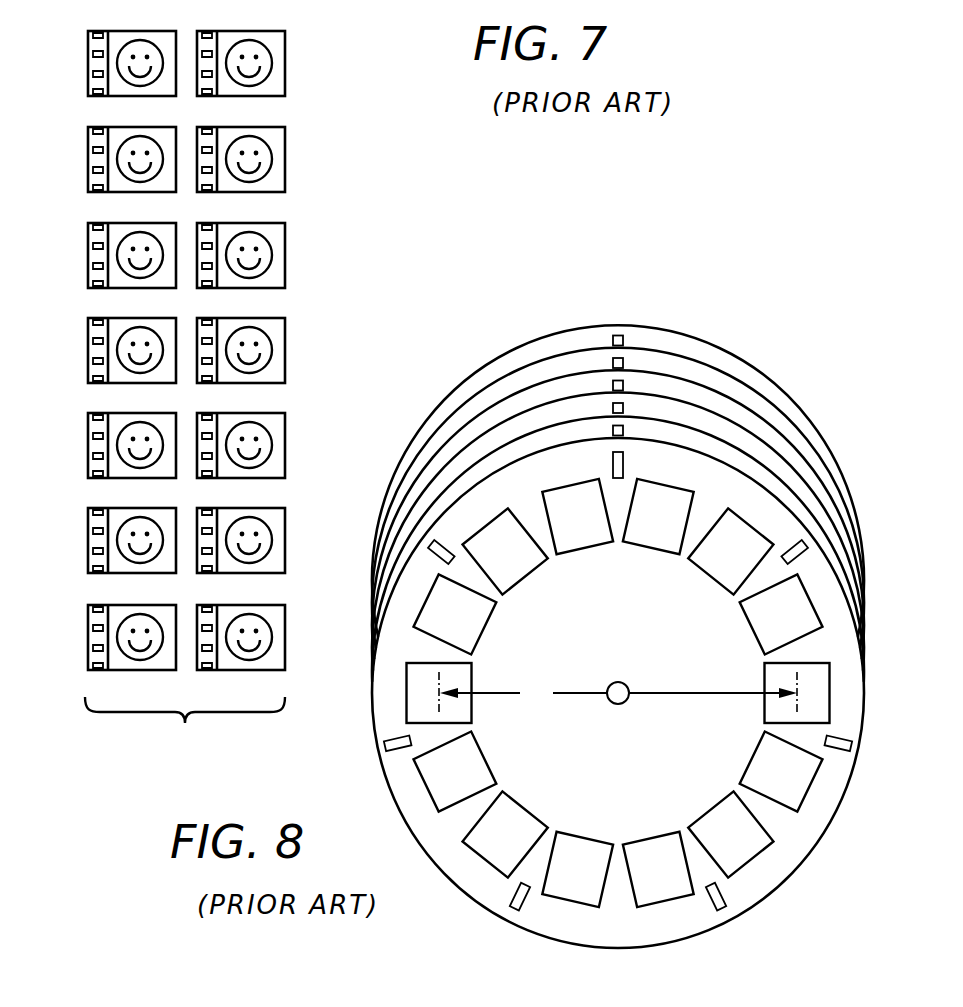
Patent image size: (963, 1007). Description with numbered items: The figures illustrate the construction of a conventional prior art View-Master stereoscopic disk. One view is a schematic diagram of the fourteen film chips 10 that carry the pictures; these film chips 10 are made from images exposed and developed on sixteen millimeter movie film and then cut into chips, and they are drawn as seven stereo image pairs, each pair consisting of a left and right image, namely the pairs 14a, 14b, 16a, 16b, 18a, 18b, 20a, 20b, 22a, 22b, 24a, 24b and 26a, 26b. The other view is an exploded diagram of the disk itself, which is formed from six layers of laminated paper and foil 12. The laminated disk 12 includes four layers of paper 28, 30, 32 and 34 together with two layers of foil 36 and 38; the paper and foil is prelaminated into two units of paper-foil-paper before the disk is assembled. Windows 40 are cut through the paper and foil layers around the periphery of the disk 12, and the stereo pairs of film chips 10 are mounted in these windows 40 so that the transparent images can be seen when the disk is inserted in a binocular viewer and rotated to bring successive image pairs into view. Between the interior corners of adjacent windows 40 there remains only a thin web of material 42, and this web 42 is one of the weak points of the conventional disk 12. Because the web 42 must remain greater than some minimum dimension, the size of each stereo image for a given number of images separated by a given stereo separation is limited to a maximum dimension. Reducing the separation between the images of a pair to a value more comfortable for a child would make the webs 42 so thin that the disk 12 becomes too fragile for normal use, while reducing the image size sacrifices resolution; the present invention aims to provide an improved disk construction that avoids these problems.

In FIG. 8, the film chips 10 is at (380, 113).
In FIG. 7, the laminated paper and foil disk 12 is at (706, 252).
In FIG. 8, the film chip of first stereo image pair 14a is at (88, 82).
In FIG. 8, the film chip of first stereo image pair 14b is at (285, 60).
In FIG. 8, the film chip of second stereo image pair 16a is at (88, 172).
In FIG. 8, the film chip of second stereo image pair 16b is at (285, 160).
In FIG. 8, the film chip of third stereo image pair 18a is at (88, 266).
In FIG. 8, the film chip of third stereo image pair 18b is at (285, 255).
In FIG. 8, the film chip of fourth stereo image pair 20a is at (88, 352).
In FIG. 8, the film chip of fourth stereo image pair 20b is at (285, 352).
In FIG. 8, the film chip of fifth stereo image pair 22a is at (88, 456).
In FIG. 8, the film chip of fifth stereo image pair 22b is at (285, 447).
In FIG. 8, the film chip of sixth stereo image pair 24a is at (88, 552).
In FIG. 8, the film chip of sixth stereo image pair 24b is at (285, 545).
In FIG. 8, the film chip of seventh stereo image pair 26a is at (88, 640).
In FIG. 8, the film chip of seventh stereo image pair 26b is at (285, 640).
In FIG. 7, the layer of paper 28 is at (640, 327).
In FIG. 7, the layer of paper 30 is at (673, 375).
In FIG. 7, the layer of paper 32 is at (705, 428).
In FIG. 7, the layer of paper 34 is at (727, 455).
In FIG. 7, the layer of foil 36 is at (783, 453).
In FIG. 7, the layer of foil 38 is at (783, 455).
In FIG. 7, the windows 40 is at (577, 553).
In FIG. 7, the web of material 42 is at (732, 601).